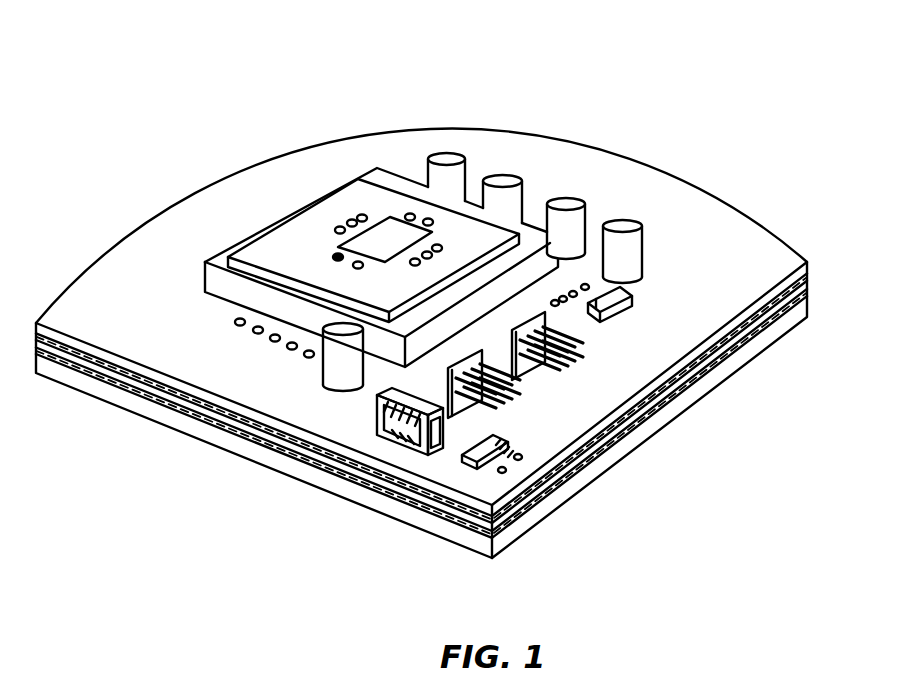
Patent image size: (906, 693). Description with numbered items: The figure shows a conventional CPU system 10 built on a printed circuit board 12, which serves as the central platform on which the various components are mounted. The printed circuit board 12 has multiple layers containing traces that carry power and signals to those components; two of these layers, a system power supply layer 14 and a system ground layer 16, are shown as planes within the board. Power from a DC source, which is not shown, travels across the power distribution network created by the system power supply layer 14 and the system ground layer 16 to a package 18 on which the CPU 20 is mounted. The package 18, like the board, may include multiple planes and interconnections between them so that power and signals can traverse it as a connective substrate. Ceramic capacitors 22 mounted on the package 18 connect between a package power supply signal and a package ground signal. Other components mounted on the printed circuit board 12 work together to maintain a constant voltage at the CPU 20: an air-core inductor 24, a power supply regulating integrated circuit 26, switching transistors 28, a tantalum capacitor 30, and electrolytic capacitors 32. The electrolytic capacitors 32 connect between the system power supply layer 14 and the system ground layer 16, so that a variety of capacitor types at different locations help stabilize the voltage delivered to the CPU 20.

The CPU system 10 is at (613, 75).
The printed circuit board 12 is at (83, 272).
The system power supply layer 14 is at (807, 280).
The system ground layer 16 is at (788, 318).
The package 18 is at (268, 258).
The CPU 20 is at (385, 225).
The ceramic capacitors 22 is at (338, 255).
The air-core inductor 24 is at (378, 427).
The power supply regulating integrated circuit 26 is at (497, 440).
The switching transistors 28 is at (578, 362).
The tantalum capacitor 30 is at (637, 302).
The electrolytic capacitors 32 is at (620, 217).